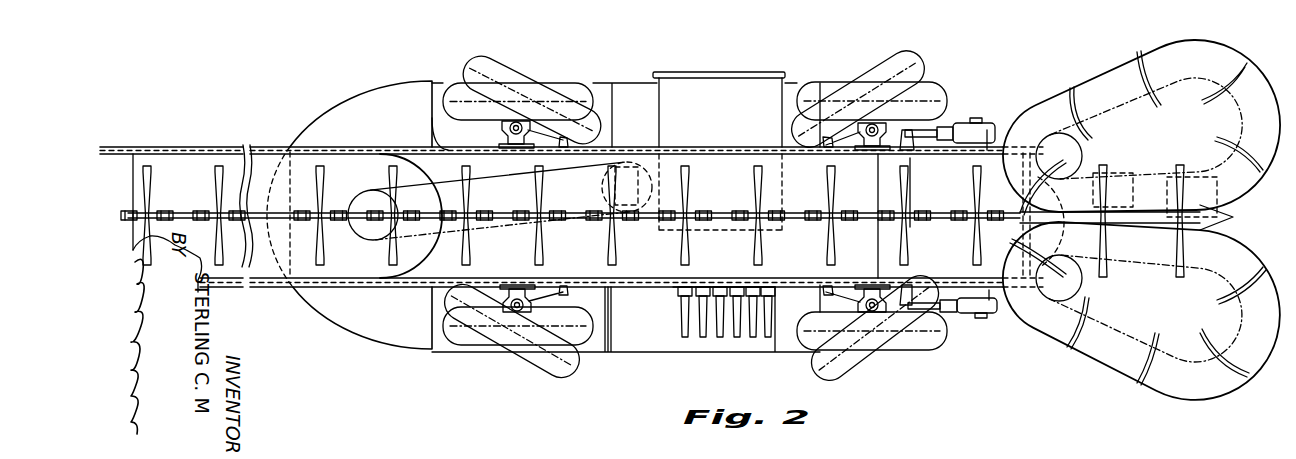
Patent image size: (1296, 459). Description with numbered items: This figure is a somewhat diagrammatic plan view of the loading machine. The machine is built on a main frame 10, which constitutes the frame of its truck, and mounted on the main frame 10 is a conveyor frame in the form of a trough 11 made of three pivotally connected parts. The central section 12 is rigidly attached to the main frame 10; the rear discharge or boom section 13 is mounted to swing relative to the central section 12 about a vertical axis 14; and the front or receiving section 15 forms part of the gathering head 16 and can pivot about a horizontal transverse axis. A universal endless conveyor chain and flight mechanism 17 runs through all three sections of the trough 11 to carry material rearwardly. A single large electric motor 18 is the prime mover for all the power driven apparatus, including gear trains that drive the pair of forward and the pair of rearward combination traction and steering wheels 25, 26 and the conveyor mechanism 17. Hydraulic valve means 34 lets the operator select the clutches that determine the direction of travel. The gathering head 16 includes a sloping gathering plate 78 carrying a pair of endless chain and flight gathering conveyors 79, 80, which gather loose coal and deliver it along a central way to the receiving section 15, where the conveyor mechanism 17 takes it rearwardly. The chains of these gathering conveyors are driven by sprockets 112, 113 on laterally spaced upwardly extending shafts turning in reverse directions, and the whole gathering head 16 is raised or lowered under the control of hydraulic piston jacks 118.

The main frame 10 is at (635, 143).
The trough 11 is at (727, 183).
The central section 12 is at (570, 237).
The boom section 13 is at (177, 170).
The vertical axis 14 is at (373, 222).
The receiving section 15 is at (990, 180).
The gathering head 16 is at (1083, 77).
The conveyor chain and flight mechanism 17 is at (848, 197).
The electric motor 18 is at (713, 72).
The forward traction and steering wheels 25 is at (937, 98).
The rearward traction and steering wheels 26 is at (460, 93).
The hydraulic valve means 34 is at (677, 317).
The gathering plate 78 is at (1112, 78).
The gathering conveyor 79 is at (1212, 192).
The gathering conveyor 80 is at (1203, 240).
The sprocket 112 is at (1083, 152).
The sprocket 113 is at (1085, 282).
The hydraulic piston jacks 118 is at (968, 124).